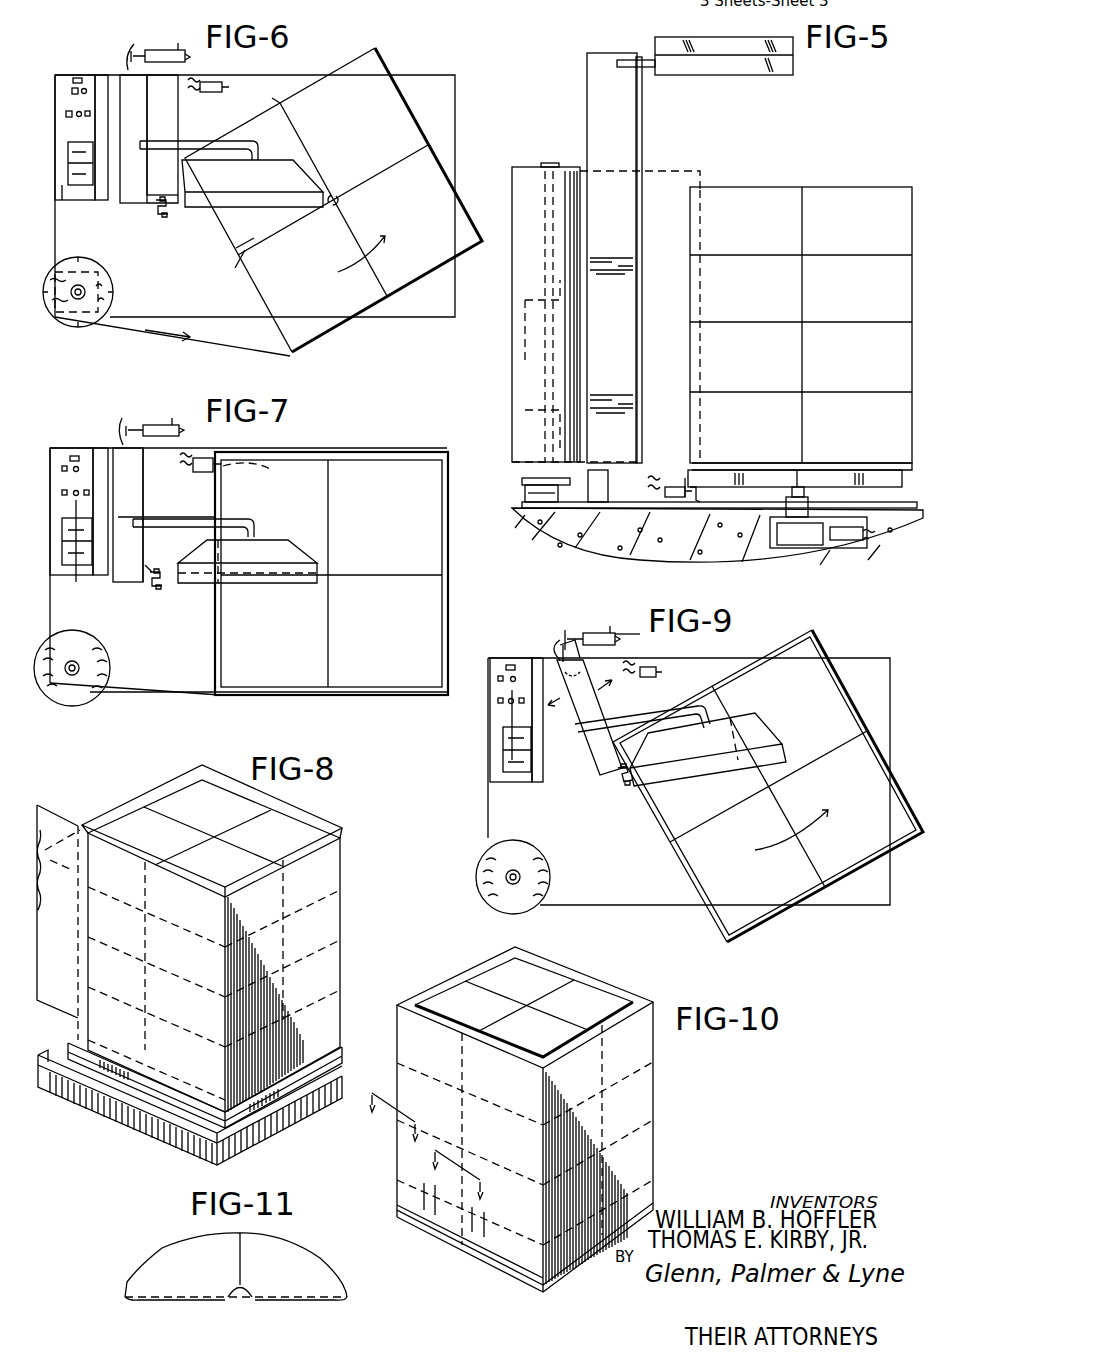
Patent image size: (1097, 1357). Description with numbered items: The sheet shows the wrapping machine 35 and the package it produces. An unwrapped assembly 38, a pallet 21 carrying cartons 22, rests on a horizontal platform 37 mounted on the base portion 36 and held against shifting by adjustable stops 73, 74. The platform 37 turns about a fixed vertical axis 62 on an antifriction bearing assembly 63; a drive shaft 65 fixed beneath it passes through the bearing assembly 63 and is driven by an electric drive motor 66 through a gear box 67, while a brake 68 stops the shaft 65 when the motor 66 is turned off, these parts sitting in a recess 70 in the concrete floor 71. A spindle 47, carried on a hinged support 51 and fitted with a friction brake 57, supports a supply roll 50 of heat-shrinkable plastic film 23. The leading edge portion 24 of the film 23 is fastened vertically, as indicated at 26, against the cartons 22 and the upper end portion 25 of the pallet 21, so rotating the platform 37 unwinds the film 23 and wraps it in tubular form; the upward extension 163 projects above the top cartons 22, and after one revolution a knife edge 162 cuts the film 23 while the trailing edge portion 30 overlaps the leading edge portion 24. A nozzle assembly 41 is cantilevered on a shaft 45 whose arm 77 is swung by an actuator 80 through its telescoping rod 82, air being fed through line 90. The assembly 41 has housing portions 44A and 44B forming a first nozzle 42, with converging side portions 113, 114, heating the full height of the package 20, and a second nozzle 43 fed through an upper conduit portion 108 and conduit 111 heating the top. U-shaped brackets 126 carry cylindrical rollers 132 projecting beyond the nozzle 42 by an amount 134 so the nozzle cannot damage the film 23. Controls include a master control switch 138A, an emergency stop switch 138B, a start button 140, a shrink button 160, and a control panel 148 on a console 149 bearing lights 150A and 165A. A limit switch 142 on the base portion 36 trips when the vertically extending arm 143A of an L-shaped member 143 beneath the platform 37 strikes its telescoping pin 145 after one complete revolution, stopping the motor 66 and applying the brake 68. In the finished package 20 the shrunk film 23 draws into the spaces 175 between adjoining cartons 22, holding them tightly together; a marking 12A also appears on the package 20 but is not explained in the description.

In FIG. 10, the section line 12A is at (414, 1165).
In FIG. 9, the overwrapped package 20 is at (783, 653).
In FIG. 8, the overwrapped package 20 is at (223, 792).
In FIG. 10, the overwrapped package 20 is at (686, 1090).
In FIG. 5, the pallet 21 is at (760, 468).
In FIG. 8, the pallet 21 is at (175, 1088).
In FIG. 10, the pallet 21 is at (548, 1288).
In FIG. 6, the cartons 22 is at (430, 172).
In FIG. 5, the cartons 22 is at (818, 198).
In FIG. 7, the cartons 22 is at (372, 470).
In FIG. 9, the cartons 22 is at (832, 748).
In FIG. 8, the cartons 22 is at (166, 798).
In FIG. 10, the cartons 22 is at (492, 1030).
In FIG. 11, the cartons 22 is at (278, 1262).
In FIG. 6, the heat-shrinkable plastic film 23 is at (272, 357).
In FIG. 7, the heat-shrinkable plastic film 23 is at (135, 689).
In FIG. 9, the heat-shrinkable plastic film 23 is at (838, 885).
In FIG. 8, the heat-shrinkable plastic film 23 is at (47, 808).
In FIG. 10, the heat-shrinkable plastic film 23 is at (650, 1020).
In FIG. 6, the leading edge portion 24 is at (292, 352).
In FIG. 5, the leading edge portion 24 is at (705, 240).
In FIG. 8, the leading edge portion 24 is at (78, 968).
In FIG. 10, the leading edge portion 24 is at (397, 1047).
In FIG. 5, the upper end portion of pallet 25 is at (745, 463).
In FIG. 10, the upper end portion of pallet 25 is at (407, 1226).
In FIG. 5, the vertical arrangement of leading edge 26 is at (709, 307).
In FIG. 10, the vertical arrangement of leading edge 26 is at (398, 1032).
In FIG. 7, the trailing edge portion 30 is at (221, 698).
In FIG. 9, the trailing edge portion 30 is at (730, 945).
In FIG. 8, the trailing edge portion 30 is at (78, 842).
In FIG. 10, the trailing edge portion 30 is at (397, 1073).
In FIG. 6, the wrapping machine 35 is at (401, 341).
In FIG. 7, the wrapping machine 35 is at (276, 707).
In FIG. 9, the wrapping machine 35 is at (650, 914).
In FIG. 6, the base portion 36 is at (166, 290).
In FIG. 5, the base portion 36 is at (620, 510).
In FIG. 7, the base portion 36 is at (167, 679).
In FIG. 9, the base portion 36 is at (609, 872).
In FIG. 8, the base portion 36 is at (58, 1065).
In FIG. 5, the horizontal platform 37 is at (835, 480).
In FIG. 8, the horizontal platform 37 is at (205, 1122).
In FIG. 6, the unwrapped assembly 38 is at (420, 45).
In FIG. 5, the unwrapped assembly 38 is at (900, 162).
In FIG. 7, the unwrapped assembly 38 is at (429, 490).
In FIG. 6, the nozzle assembly 41 is at (126, 222).
In FIG. 5, the nozzle assembly 41 is at (656, 131).
In FIG. 7, the nozzle assembly 41 is at (135, 598).
In FIG. 9, the nozzle assembly 41 is at (591, 804).
In FIG. 6, the first nozzle 42 is at (170, 207).
In FIG. 7, the first nozzle 42 is at (163, 592).
In FIG. 9, the first nozzle 42 is at (640, 775).
In FIG. 6, the second nozzle 43 is at (296, 193).
In FIG. 5, the second nozzle 43 is at (728, 75).
In FIG. 7, the second nozzle 43 is at (255, 585).
In FIG. 9, the second nozzle 43 is at (772, 755).
In FIG. 5, the housing portion 44A is at (580, 128).
In FIG. 5, the housing portion 44B is at (804, 86).
In FIG. 5, the shaft 45 is at (590, 495).
In FIG. 5, the spindle 47 is at (525, 248).
In FIG. 6, the supply roll 50 is at (68, 326).
In FIG. 5, the supply roll 50 is at (530, 175).
In FIG. 7, the supply roll 50 is at (60, 700).
In FIG. 9, the supply roll 50 is at (476, 860).
In FIG. 5, the hinged support 51 is at (510, 503).
In FIG. 5, the friction brake 57 is at (535, 485).
In FIG. 5, the fixed vertical axis 62 is at (800, 470).
In FIG. 5, the antifriction bearing assembly 63 is at (800, 497).
In FIG. 5, the drive shaft 65 is at (794, 487).
In FIG. 5, the electric drive motor 66 is at (852, 540).
In FIG. 5, the gear box 67 is at (808, 545).
In FIG. 5, the brake 68 is at (772, 548).
In FIG. 5, the recess 70 is at (862, 534).
In FIG. 5, the concrete floor 71 is at (635, 510).
In FIG. 6, the stop 73 is at (236, 252).
In FIG. 6, the stop 74 is at (275, 99).
In FIG. 5, the stop 74 is at (905, 450).
In FIG. 6, the arm 77 is at (142, 47).
In FIG. 7, the arm 77 is at (111, 416).
In FIG. 9, the arm 77 is at (542, 639).
In FIG. 6, the actuator 80 is at (162, 50).
In FIG. 7, the actuator 80 is at (151, 425).
In FIG. 9, the actuator 80 is at (588, 633).
In FIG. 9, the telescoping rod 82 is at (566, 632).
In FIG. 9, the air line 90 is at (643, 644).
In FIG. 7, the upper conduit portion 108 is at (135, 523).
In FIG. 9, the upper conduit portion 108 is at (592, 736).
In FIG. 7, the conduit 111 is at (232, 525).
In FIG. 9, the conduit 111 is at (716, 705).
In FIG. 7, the converging side portion 113 is at (148, 600).
In FIG. 7, the converging side portion 114 is at (155, 570).
In FIG. 6, the U-shaped brackets 126 is at (160, 212).
In FIG. 9, the U-shaped brackets 126 is at (625, 805).
In FIG. 5, the cylindrical rollers 132 is at (640, 314).
In FIG. 9, the cylindrical rollers 132 is at (660, 758).
In FIG. 6, the roller projection amount 134 is at (195, 196).
In FIG. 6, the master control switch 138A is at (86, 67).
In FIG. 9, the master control switch 138A is at (511, 650).
In FIG. 6, the emergency stop switch 138B is at (94, 113).
In FIG. 6, the start button 140 is at (66, 95).
In FIG. 9, the start button 140 is at (497, 680).
In FIG. 6, the limit switch 142 is at (212, 96).
In FIG. 5, the limit switch 142 is at (670, 487).
In FIG. 7, the limit switch 142 is at (210, 478).
In FIG. 9, the limit switch 142 is at (643, 686).
In FIG. 5, the L-shaped member 143 is at (698, 487).
In FIG. 7, the L-shaped member 143 is at (272, 474).
In FIG. 5, the vertically extending arm 143A is at (695, 505).
In FIG. 6, the telescoping pin 145 is at (214, 82).
In FIG. 5, the telescoping pin 145 is at (683, 478).
In FIG. 7, the telescoping pin 145 is at (212, 458).
In FIG. 7, the control panel 148 is at (60, 438).
In FIG. 9, the control panel 148 is at (485, 765).
In FIG. 6, the console 149 is at (78, 212).
In FIG. 9, the console 149 is at (495, 772).
In FIG. 7, the light 150A is at (80, 462).
In FIG. 9, the light 150A is at (520, 667).
In FIG. 6, the shrink button 160 is at (70, 125).
In FIG. 9, the shrink button 160 is at (500, 705).
In FIG. 7, the knife edge 162 is at (212, 698).
In FIG. 8, the knife edge 162 is at (60, 922).
In FIG. 8, the upward extension 163 is at (318, 822).
In FIG. 7, the light 165A is at (81, 558).
In FIG. 9, the light 165A is at (512, 770).
In FIG. 11, the spaces between cartons 175 is at (242, 1297).